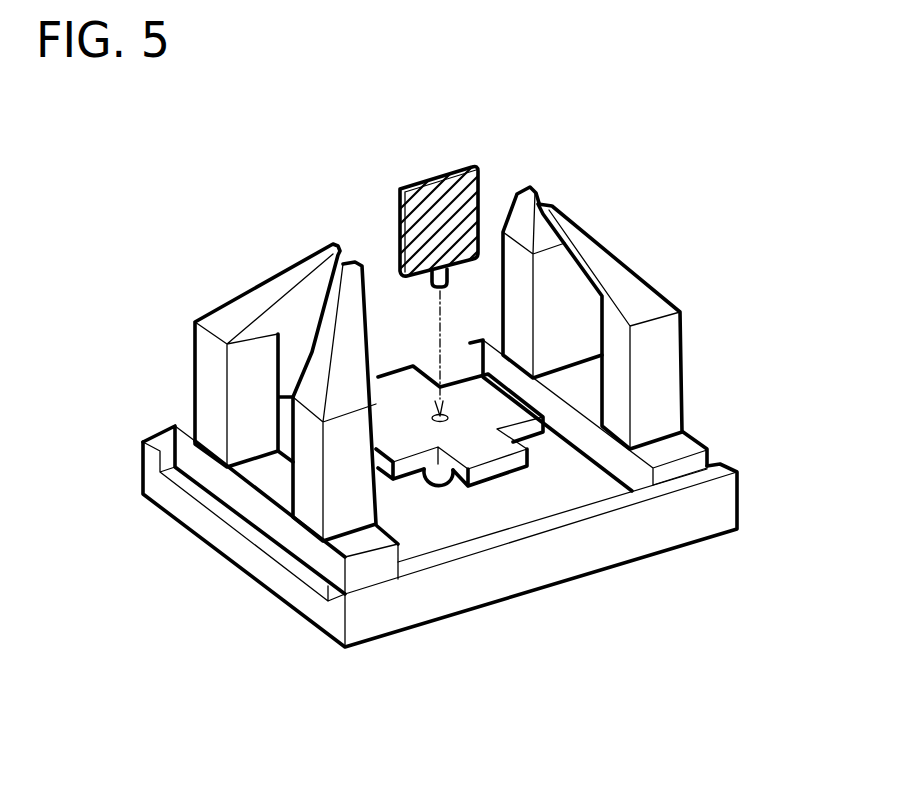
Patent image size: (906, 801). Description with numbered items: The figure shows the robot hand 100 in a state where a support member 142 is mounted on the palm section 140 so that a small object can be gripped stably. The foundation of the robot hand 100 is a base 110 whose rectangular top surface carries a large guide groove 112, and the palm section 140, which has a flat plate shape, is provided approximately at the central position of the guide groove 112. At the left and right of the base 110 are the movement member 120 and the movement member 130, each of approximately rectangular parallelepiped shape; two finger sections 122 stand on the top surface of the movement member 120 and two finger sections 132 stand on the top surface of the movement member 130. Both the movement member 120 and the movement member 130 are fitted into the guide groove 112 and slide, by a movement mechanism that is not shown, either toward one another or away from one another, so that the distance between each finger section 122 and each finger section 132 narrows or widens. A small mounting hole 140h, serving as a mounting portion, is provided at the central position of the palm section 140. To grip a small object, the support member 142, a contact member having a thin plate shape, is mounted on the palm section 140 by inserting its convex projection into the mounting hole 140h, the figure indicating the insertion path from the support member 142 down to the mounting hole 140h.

The robot hand 100 is at (350, 200).
The base 110 is at (250, 578).
The guide groove 112 is at (434, 522).
The movement member 120 is at (175, 427).
The finger sections 122 is at (310, 347).
The movement member 130 is at (703, 443).
The finger sections 132 is at (537, 193).
The palm section 140 is at (496, 483).
The mounting hole 140h is at (448, 421).
The support member 142 is at (478, 166).